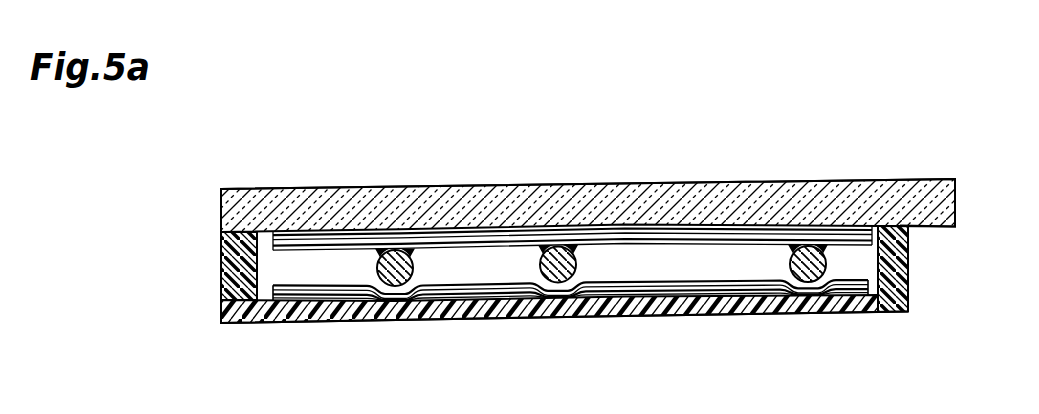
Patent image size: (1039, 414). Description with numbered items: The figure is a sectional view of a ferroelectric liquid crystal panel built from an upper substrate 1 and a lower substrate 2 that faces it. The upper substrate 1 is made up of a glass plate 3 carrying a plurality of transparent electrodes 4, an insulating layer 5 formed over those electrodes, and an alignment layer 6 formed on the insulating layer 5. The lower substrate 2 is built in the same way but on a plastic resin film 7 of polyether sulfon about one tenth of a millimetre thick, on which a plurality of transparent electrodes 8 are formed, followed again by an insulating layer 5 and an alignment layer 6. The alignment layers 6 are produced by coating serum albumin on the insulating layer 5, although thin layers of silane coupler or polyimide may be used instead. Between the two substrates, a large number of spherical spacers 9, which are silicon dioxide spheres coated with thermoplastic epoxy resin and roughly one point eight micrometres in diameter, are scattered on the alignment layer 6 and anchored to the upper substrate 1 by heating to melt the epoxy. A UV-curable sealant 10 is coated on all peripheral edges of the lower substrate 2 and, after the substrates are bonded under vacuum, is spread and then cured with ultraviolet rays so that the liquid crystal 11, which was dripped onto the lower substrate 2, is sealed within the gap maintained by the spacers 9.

The upper substrate 1 is at (959, 179).
The lower substrate 2 is at (316, 325).
The glass plate 3 is at (722, 197).
The transparent electrodes 4 is at (955, 224).
The insulating layer 5 is at (296, 236).
The alignment layer 6 is at (358, 236).
The plastic resin film 7 is at (498, 312).
The transparent electrodes 8 is at (850, 287).
The spherical spacer 9 is at (787, 257).
The UV-curable sealant 10 is at (232, 273).
The liquid crystal 11 is at (653, 270).